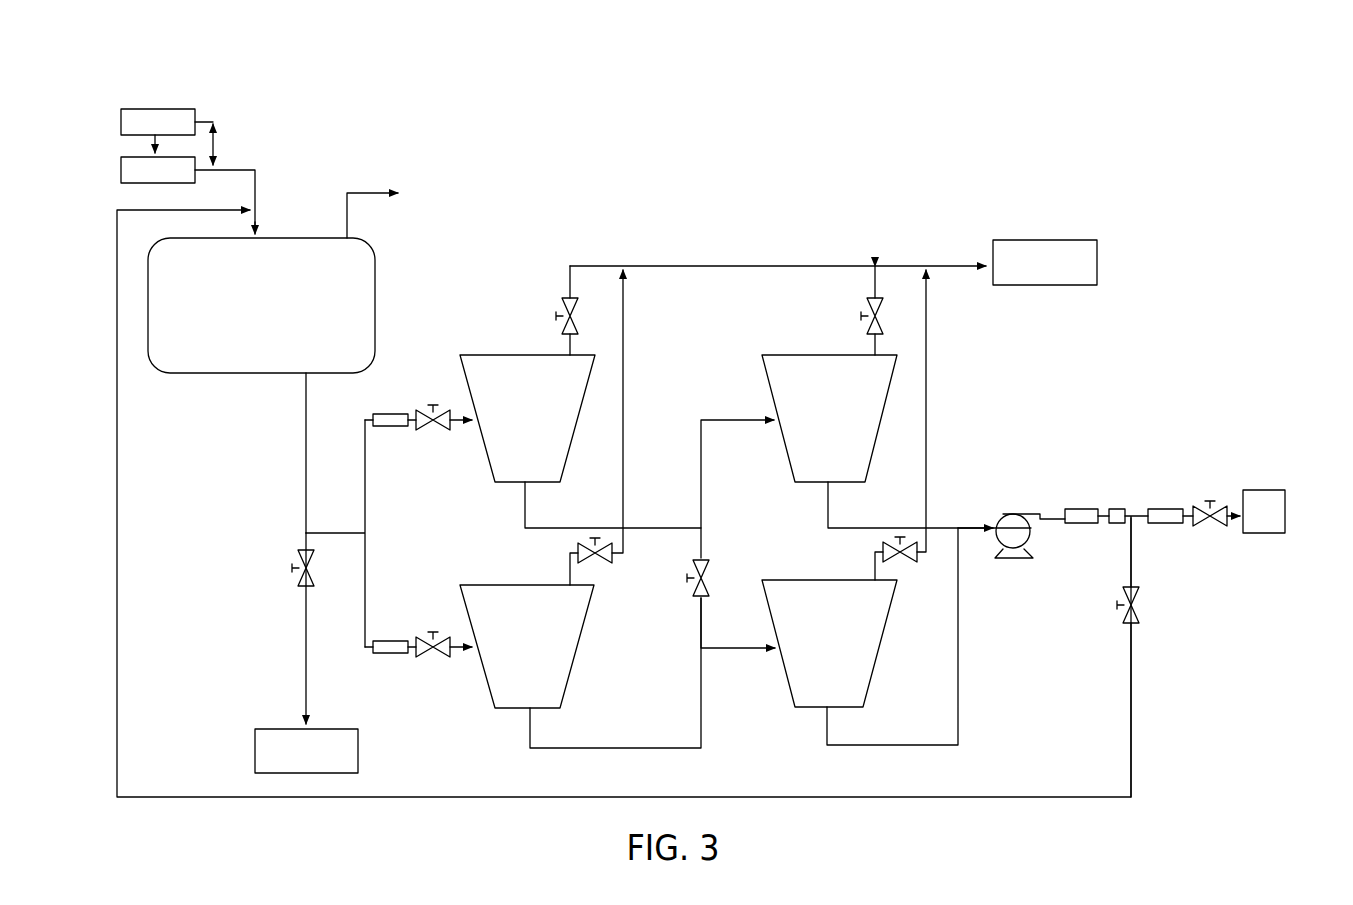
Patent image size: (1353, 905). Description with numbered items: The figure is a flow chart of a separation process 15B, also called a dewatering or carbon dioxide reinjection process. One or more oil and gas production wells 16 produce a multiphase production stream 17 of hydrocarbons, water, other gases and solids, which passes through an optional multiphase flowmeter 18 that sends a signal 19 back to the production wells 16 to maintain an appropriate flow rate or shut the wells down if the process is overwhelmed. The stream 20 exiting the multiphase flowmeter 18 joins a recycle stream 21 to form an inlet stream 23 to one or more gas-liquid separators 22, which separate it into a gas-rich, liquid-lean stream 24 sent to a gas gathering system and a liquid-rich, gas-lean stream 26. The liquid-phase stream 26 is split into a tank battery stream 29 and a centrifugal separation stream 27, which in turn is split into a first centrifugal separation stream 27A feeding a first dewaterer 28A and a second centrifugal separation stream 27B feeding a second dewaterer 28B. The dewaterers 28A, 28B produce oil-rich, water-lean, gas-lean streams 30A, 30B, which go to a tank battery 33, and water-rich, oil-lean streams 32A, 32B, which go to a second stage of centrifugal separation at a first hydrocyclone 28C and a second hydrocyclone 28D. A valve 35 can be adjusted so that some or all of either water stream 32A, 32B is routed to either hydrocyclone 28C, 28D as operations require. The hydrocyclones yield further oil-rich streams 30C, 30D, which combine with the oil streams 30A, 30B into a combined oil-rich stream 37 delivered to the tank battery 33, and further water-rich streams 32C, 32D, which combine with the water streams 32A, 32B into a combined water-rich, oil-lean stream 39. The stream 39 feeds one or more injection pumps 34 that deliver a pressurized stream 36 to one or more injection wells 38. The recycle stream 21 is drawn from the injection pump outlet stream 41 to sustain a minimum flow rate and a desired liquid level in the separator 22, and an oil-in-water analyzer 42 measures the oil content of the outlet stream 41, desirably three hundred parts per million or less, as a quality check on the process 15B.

The separation process 15B is at (752, 174).
The oil and gas production wells 16 is at (197, 114).
The multiphase production stream 17 is at (216, 140).
The multiphase flowmeter 18 is at (200, 167).
The signal 19 is at (216, 124).
The stream exiting multiphase flowmeter 20 is at (258, 185).
The recycle stream 21 is at (192, 798).
The gas-liquid separators 22 is at (377, 270).
The inlet stream 23 is at (260, 225).
The gas-rich, liquid-lean stream 24 is at (382, 192).
The liquid-rich, gas-lean stream 26 is at (306, 443).
The centrifugal separation stream 27 is at (362, 533).
The first centrifugal separation stream 27A is at (465, 413).
The second centrifugal separation stream 27B is at (465, 641).
The first dewaterer 28A is at (522, 354).
The second dewaterer 28B is at (490, 705).
The first hydrocyclone 28C is at (785, 354).
The second hydrocyclone 28D is at (783, 673).
The tank battery stream 29 is at (306, 620).
The oil-rich, water-lean, gas-lean stream 30A is at (600, 264).
The oil-rich, water-lean, gas-lean stream 30B is at (625, 297).
The further oil-rich, water-lean, gas-lean stream 30C is at (870, 288).
The further oil-rich, water-lean, gas-lean stream 30D is at (922, 297).
The water-rich, oil-lean stream 32A is at (523, 503).
The water-rich, oil-lean stream 32B is at (707, 718).
The further water-rich, oil-lean stream 32C is at (938, 526).
The further water-rich, oil-lean stream 32D is at (960, 722).
The tank battery 33 is at (1027, 240).
The injection pumps 34 is at (1015, 513).
The valve 35 is at (704, 558).
The pressurized stream 36 is at (1145, 506).
The combined oil-rich, water-lean, gas-lean stream 37 is at (972, 262).
The injection wells 38 is at (1268, 540).
The combined water-rich, oil-lean stream 39 is at (972, 532).
The injection pump outlet stream 41 is at (1057, 512).
The oil-in-water analyzer 42 is at (1114, 506).